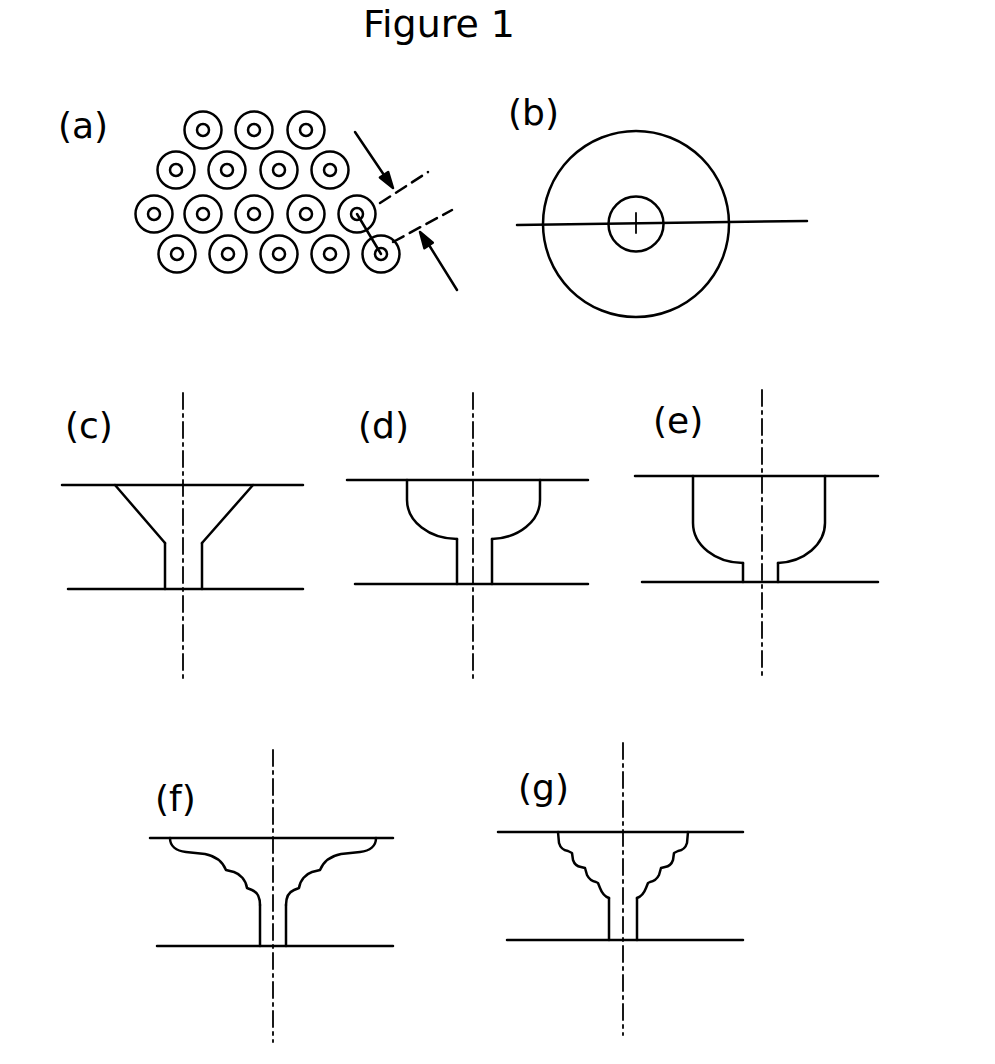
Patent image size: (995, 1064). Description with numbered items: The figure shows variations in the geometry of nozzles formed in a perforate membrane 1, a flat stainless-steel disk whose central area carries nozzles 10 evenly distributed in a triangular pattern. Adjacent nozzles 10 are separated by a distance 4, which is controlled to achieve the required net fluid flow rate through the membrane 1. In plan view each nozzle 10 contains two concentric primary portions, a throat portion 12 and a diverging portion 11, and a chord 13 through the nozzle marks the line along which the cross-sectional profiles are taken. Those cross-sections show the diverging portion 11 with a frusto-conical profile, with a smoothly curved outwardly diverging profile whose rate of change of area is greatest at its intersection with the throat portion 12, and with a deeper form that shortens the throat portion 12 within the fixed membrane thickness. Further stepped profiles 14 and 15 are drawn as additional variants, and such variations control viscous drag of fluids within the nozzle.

The membrane 1 is at (142, 244).
The distance 4 is at (406, 211).
The nozzle 10 is at (243, 263).
The diverging portion 11 is at (718, 175).
The throat portion 12 is at (648, 197).
The chord 13 is at (748, 220).
The stepped curved portion 14 is at (238, 882).
The stepped angular portion 15 is at (585, 875).